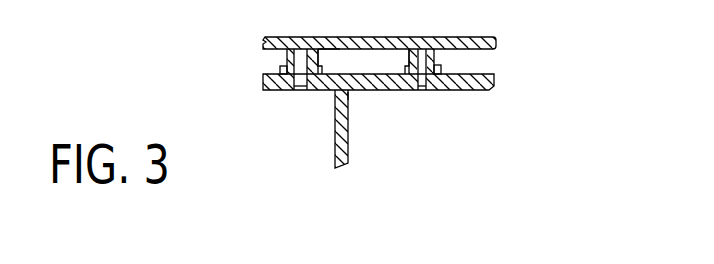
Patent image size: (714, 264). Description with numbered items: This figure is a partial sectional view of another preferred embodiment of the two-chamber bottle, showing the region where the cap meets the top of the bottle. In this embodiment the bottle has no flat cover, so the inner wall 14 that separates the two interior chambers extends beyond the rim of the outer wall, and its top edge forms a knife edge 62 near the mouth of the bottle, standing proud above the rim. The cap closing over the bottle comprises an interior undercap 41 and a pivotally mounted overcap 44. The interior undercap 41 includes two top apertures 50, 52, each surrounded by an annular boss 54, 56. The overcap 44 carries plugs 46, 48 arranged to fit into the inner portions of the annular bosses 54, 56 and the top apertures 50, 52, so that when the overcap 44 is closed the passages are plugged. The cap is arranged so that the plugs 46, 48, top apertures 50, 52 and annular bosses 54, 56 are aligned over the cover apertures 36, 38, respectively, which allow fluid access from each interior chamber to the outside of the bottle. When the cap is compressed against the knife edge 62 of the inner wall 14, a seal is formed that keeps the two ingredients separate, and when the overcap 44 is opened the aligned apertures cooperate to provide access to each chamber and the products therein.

The inner wall 14 is at (348, 163).
The cover aperture 36 is at (302, 90).
The cover aperture 38 is at (413, 90).
The interior undercap 41 is at (492, 88).
The overcap 44 is at (492, 38).
The plug 46 is at (287, 55).
The plug 48 is at (437, 56).
The top aperture 50 is at (285, 90).
The top aperture 52 is at (420, 90).
The annular boss 54 is at (322, 52).
The annular boss 56 is at (441, 66).
The knife edge 62 is at (348, 97).